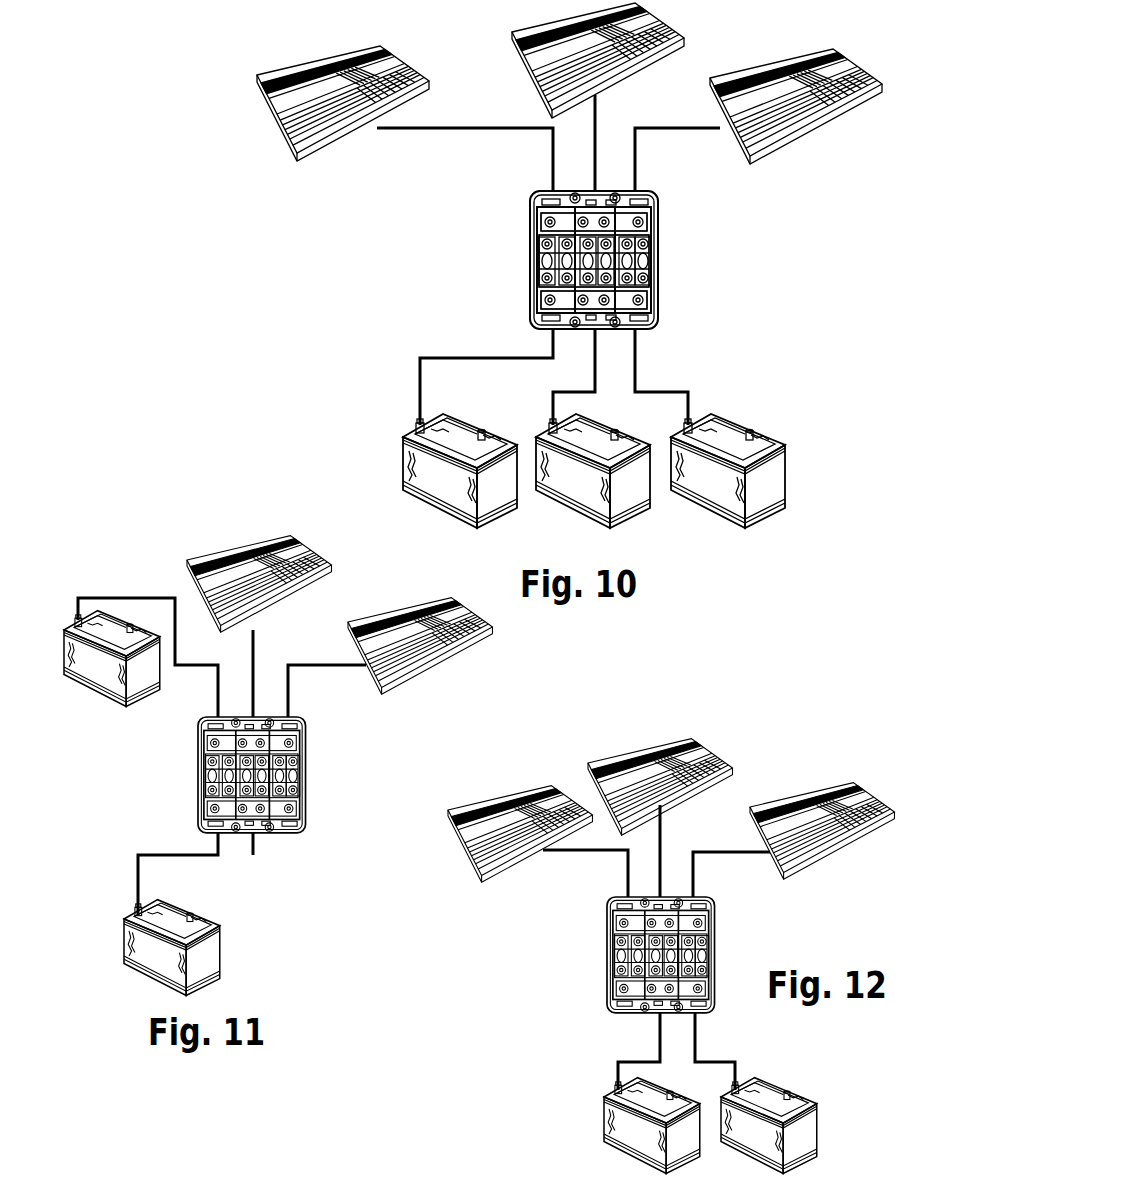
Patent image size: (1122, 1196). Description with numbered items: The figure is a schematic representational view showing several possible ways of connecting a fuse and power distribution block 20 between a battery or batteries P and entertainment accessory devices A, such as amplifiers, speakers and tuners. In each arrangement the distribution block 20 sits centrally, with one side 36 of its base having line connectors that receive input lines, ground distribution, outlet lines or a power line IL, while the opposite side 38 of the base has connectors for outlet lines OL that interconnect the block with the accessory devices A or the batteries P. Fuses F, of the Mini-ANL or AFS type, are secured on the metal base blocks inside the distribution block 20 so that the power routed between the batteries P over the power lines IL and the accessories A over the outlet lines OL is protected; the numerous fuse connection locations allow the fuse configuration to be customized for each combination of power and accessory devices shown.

In FIG. 10, the accessory device A is at (297, 118).
In FIG. 11, the accessory device A is at (230, 570).
In FIG. 12, the accessory device A is at (507, 827).
In FIG. 10, the outlet line OL is at (463, 128).
In FIG. 11, the outlet line OL is at (253, 665).
In FIG. 12, the outlet line OL is at (628, 870).
In FIG. 10, the power line IL is at (490, 357).
In FIG. 11, the power line IL is at (218, 838).
In FIG. 12, the power line IL is at (660, 1035).
In FIG. 10, the fuse F is at (530, 260).
In FIG. 10, the distribution block 20 is at (672, 275).
In FIG. 11, the distribution block 20 is at (330, 735).
In FIG. 12, the distribution block 20 is at (661, 955).
In FIG. 10, the one side of the base 36 is at (672, 300).
In FIG. 10, the opposite side of the base 38 is at (672, 218).
In FIG. 10, the battery P is at (594, 471).
In FIG. 11, the battery P is at (98, 673).
In FIG. 12, the battery P is at (630, 1125).